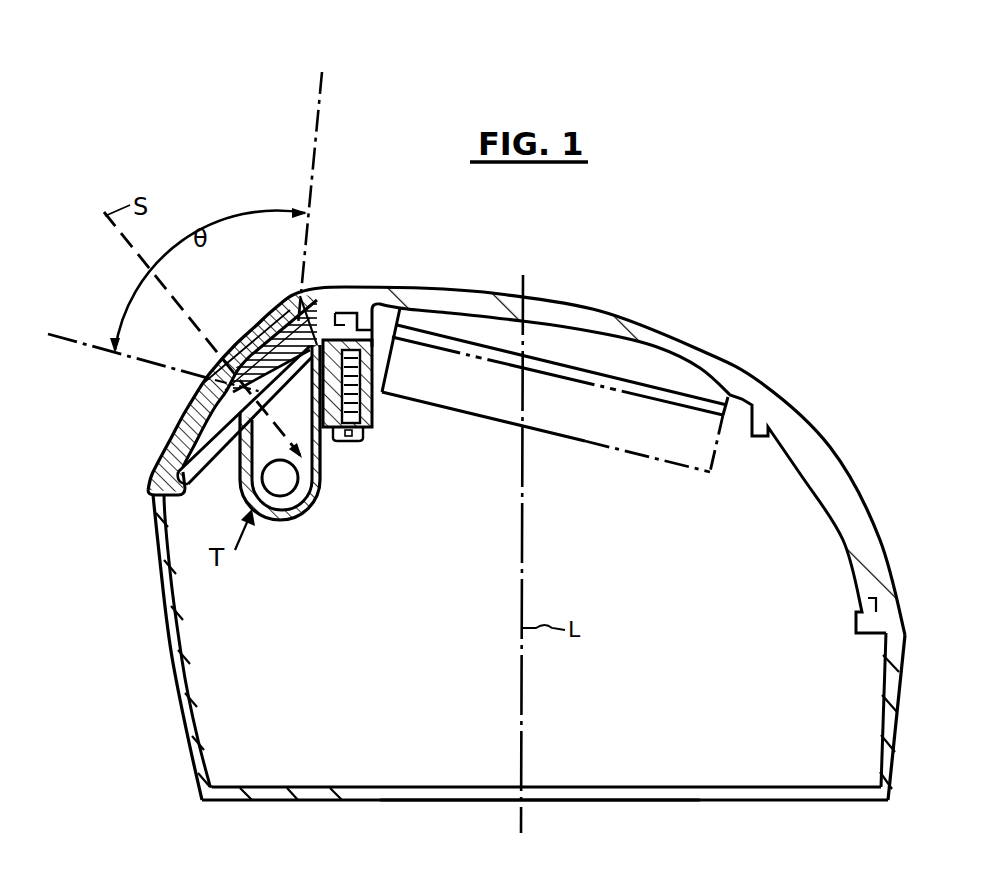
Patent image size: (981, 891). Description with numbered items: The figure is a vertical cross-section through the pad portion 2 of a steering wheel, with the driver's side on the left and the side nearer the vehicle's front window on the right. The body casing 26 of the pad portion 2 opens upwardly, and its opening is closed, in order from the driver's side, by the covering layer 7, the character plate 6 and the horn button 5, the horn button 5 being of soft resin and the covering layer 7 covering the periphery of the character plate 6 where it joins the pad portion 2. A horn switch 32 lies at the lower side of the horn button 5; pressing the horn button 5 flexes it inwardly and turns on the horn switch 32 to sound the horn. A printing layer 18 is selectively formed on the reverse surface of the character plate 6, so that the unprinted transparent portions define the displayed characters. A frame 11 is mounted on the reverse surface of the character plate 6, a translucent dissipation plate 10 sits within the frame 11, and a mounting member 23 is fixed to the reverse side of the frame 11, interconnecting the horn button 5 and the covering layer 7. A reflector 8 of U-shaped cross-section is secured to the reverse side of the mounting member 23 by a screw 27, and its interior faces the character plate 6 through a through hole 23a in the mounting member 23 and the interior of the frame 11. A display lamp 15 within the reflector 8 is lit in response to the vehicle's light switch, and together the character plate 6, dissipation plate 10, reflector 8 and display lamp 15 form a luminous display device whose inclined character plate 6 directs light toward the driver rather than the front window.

The pad portion 2 is at (713, 357).
The horn button 5 is at (595, 322).
The character plate 6 is at (232, 350).
The covering layer 7 is at (172, 432).
The reflector 8 is at (321, 478).
The dissipation plate 10 is at (203, 378).
The frame 11 is at (266, 348).
The display lamp 15 is at (283, 490).
The printing layer 18 is at (281, 312).
The mounting member 23 is at (229, 434).
The through hole 23a is at (300, 296).
The body casing 26 is at (699, 803).
The screw 27 is at (365, 433).
The horn switch 32 is at (585, 442).